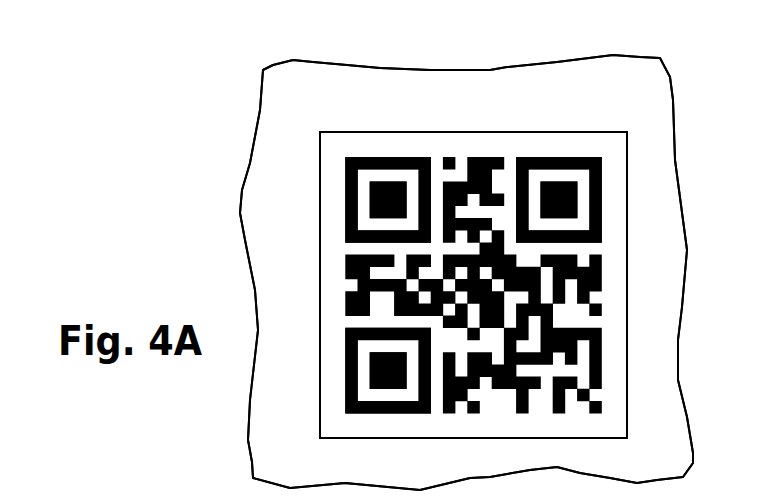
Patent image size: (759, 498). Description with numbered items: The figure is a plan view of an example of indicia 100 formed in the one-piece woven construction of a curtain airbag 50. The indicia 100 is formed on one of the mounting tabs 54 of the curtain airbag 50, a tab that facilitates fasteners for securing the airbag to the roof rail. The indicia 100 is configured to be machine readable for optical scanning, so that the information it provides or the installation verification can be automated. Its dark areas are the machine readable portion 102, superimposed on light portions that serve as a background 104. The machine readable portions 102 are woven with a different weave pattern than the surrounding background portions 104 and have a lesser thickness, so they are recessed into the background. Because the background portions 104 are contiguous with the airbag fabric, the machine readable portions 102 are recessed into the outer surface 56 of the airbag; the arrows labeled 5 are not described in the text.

The reading direction arrows 5 is at (363, 160).
The carrier substrate 50 is at (313, 85).
The marking surface 54 is at (466, 272).
The marking region 56 is at (548, 100).
The two-dimensional code 100 is at (495, 110).
The position detection pattern 102 is at (503, 157).
The quiet zone border 104 is at (442, 143).